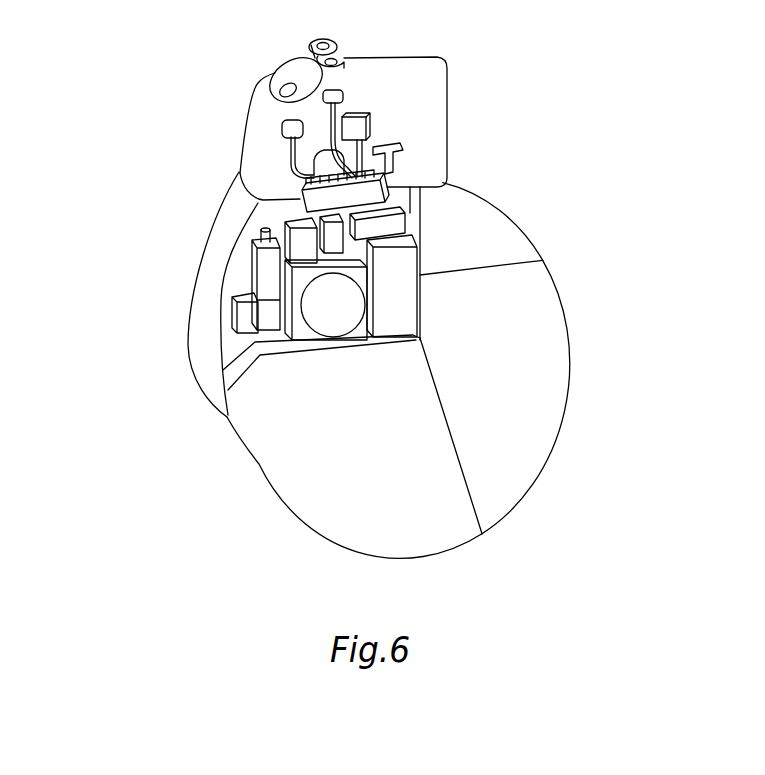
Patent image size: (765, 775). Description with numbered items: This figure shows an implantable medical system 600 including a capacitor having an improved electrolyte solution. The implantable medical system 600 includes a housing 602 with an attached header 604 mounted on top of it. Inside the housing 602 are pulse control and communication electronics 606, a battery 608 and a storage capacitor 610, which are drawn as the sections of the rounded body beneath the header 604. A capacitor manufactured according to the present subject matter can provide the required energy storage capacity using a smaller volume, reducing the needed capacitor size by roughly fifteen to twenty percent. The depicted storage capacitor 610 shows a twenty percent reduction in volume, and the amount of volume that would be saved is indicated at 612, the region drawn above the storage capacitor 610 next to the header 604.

The implantable medical system 600 is at (140, 50).
The housing 602 is at (187, 322).
The header 604 is at (390, 70).
The pulse control and communication electronics 606 is at (267, 273).
The battery 608 is at (312, 505).
The storage capacitor 610 is at (540, 347).
The capacitor volume reduction 612 is at (493, 218).